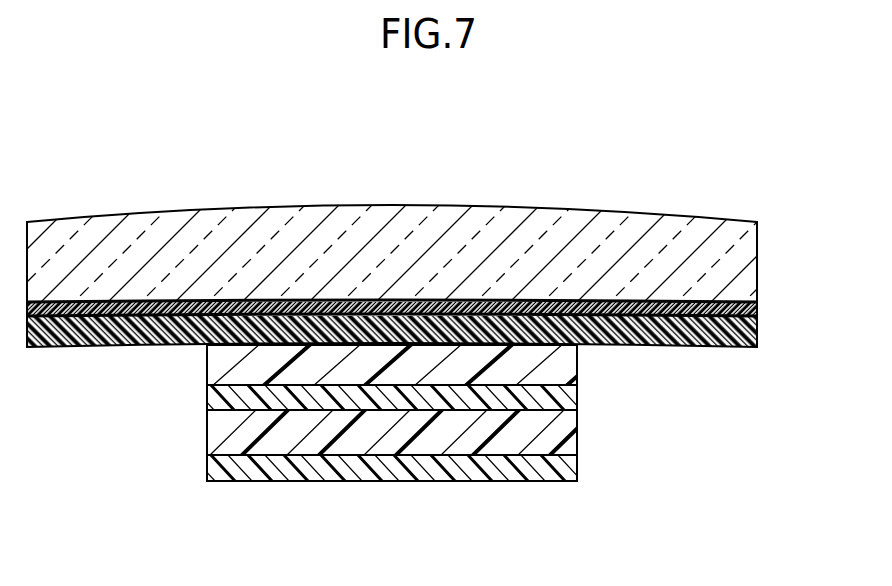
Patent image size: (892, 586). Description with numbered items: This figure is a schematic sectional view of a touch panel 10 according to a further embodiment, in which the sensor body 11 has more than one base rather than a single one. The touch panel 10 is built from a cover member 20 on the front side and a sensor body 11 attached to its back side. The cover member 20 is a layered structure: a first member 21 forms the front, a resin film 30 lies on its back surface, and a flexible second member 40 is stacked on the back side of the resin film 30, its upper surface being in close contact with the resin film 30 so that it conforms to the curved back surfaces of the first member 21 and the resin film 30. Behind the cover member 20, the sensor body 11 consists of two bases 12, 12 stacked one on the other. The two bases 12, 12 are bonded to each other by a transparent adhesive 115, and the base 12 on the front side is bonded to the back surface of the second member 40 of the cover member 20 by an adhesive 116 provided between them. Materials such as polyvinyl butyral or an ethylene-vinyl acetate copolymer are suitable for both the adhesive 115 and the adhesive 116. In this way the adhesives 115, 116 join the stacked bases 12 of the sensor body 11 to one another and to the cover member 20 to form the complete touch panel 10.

The touch panel 10 is at (523, 150).
The cover member 20 is at (572, 193).
The first member 21 is at (757, 257).
The resin film 30 is at (757, 310).
The second member 40 is at (757, 337).
The sensor body 11 is at (386, 455).
The base 12 is at (577, 395).
The transparent adhesive 115 is at (207, 437).
The adhesive 116 is at (207, 363).